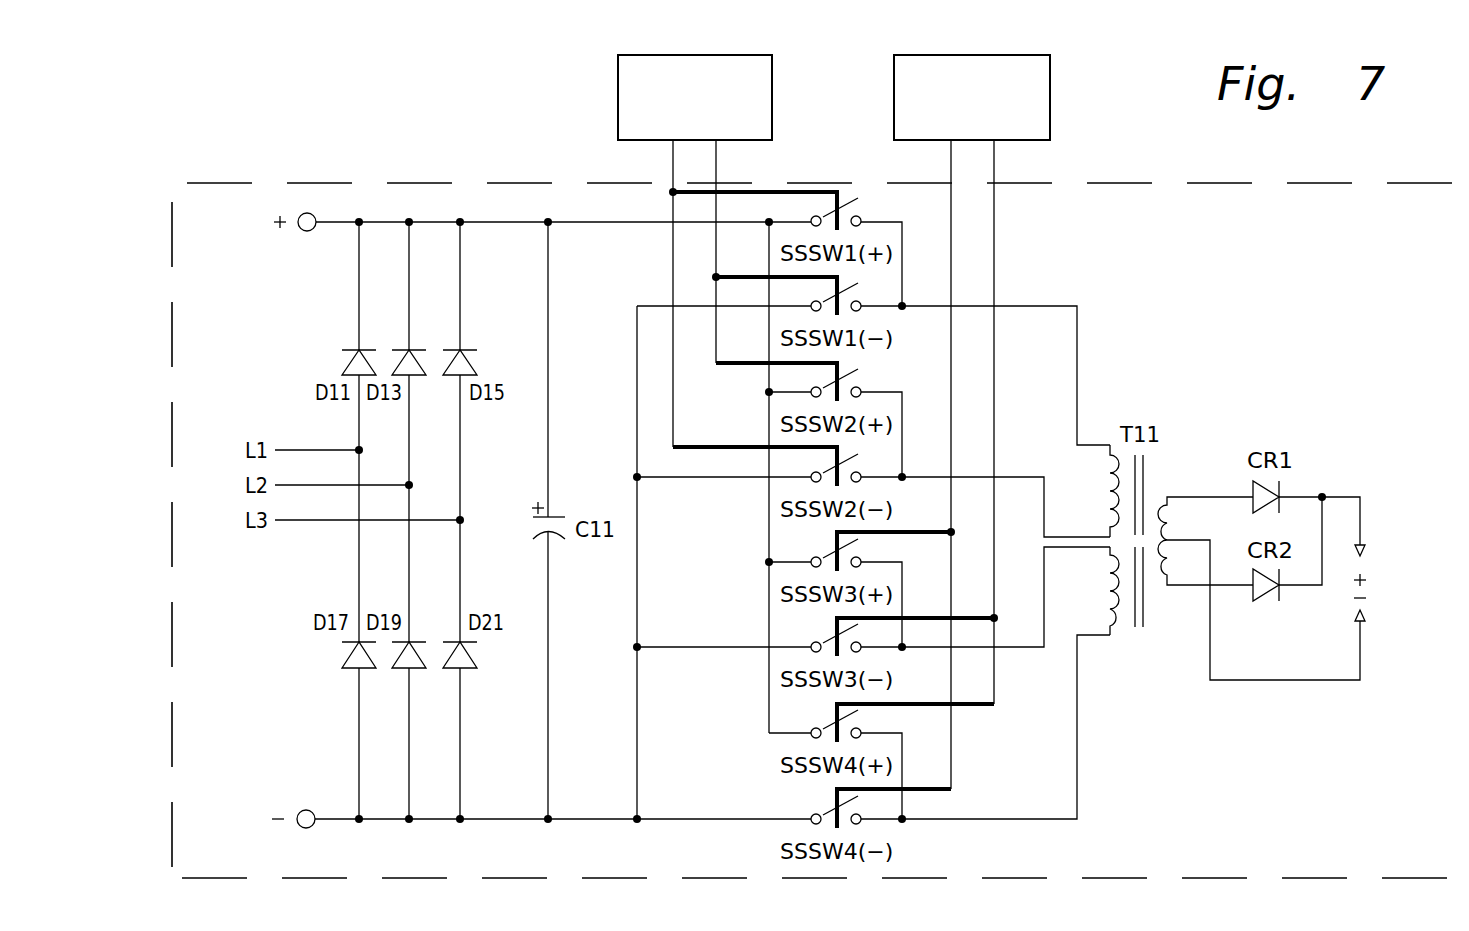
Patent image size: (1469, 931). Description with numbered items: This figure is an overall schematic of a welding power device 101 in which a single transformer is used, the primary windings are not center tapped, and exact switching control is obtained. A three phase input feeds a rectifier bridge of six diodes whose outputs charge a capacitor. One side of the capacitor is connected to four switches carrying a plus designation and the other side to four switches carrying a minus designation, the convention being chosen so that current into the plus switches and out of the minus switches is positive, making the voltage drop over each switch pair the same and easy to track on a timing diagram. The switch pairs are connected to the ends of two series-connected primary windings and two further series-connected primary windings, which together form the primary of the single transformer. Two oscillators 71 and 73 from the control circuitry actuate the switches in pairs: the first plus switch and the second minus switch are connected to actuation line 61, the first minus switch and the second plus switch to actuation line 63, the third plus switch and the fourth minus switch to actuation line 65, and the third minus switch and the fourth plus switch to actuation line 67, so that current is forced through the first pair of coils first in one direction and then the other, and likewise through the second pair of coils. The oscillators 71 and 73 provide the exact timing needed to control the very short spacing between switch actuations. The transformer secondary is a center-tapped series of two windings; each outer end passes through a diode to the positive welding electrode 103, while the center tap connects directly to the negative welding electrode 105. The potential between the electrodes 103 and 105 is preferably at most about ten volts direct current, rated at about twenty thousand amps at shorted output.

The actuation line 61 is at (673, 165).
The actuation line 63 is at (716, 165).
The actuation line 65 is at (951, 165).
The actuation line 67 is at (994, 165).
The oscillator 71 is at (772, 73).
The oscillator 73 is at (1050, 73).
The schematic device 101 is at (1162, 348).
The welding electrode 103 is at (1368, 556).
The welding electrode 105 is at (1368, 616).